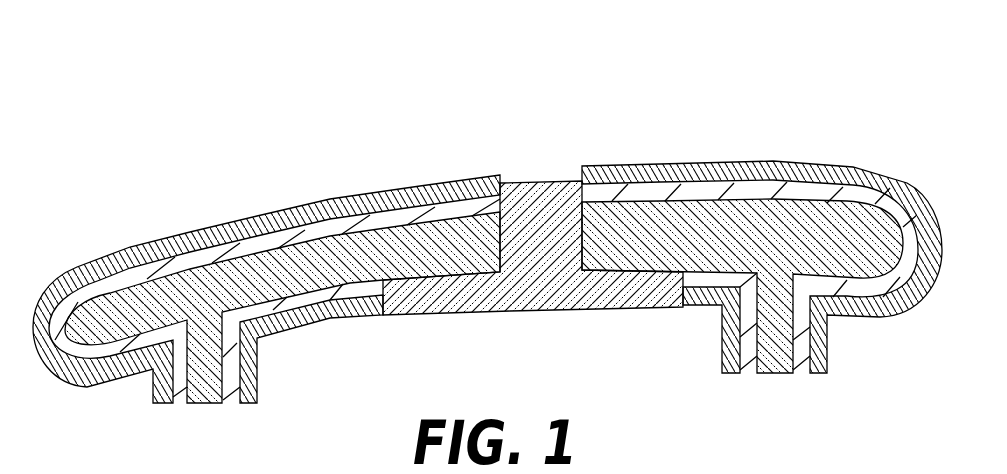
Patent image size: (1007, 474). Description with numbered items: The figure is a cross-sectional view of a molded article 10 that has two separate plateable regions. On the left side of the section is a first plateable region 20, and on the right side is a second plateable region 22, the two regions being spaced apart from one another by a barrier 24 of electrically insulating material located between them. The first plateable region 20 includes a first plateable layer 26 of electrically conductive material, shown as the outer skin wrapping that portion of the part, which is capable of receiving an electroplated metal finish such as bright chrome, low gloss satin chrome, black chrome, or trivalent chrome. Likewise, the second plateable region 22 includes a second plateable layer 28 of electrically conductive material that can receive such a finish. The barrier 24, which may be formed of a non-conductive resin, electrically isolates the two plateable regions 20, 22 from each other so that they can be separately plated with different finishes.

The molded article 10 is at (211, 90).
The first plateable region 20 is at (330, 190).
The second plateable region 22 is at (770, 159).
The barrier 24 is at (545, 192).
The first plateable layer 26 is at (243, 228).
The second plateable layer 28 is at (857, 172).